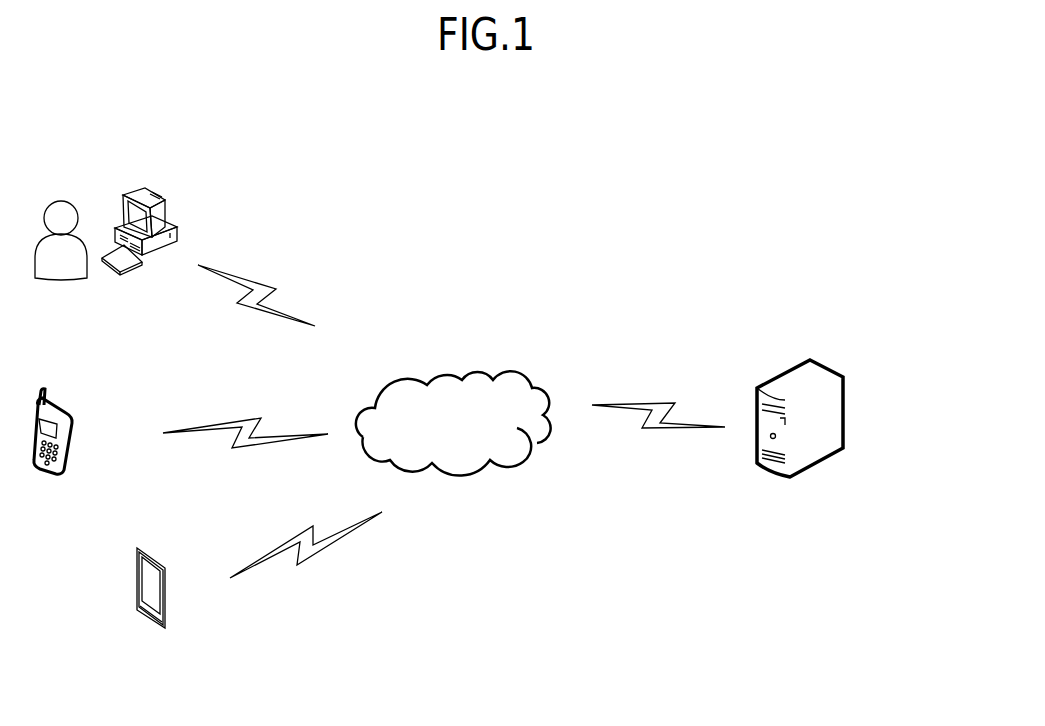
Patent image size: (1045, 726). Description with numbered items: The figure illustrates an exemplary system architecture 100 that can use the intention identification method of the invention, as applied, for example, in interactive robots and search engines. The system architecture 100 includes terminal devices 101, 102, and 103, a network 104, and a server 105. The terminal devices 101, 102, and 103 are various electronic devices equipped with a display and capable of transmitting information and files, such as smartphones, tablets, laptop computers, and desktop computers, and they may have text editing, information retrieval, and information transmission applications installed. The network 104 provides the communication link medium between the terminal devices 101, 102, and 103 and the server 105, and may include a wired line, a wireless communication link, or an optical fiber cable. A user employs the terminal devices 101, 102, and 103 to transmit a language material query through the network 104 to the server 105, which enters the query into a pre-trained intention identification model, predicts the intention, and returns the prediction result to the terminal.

The system architecture 100 is at (609, 220).
The terminal device 101 is at (142, 552).
The terminal device 102 is at (72, 415).
The terminal device 103 is at (138, 192).
The network 104 is at (527, 392).
The server 105 is at (840, 370).